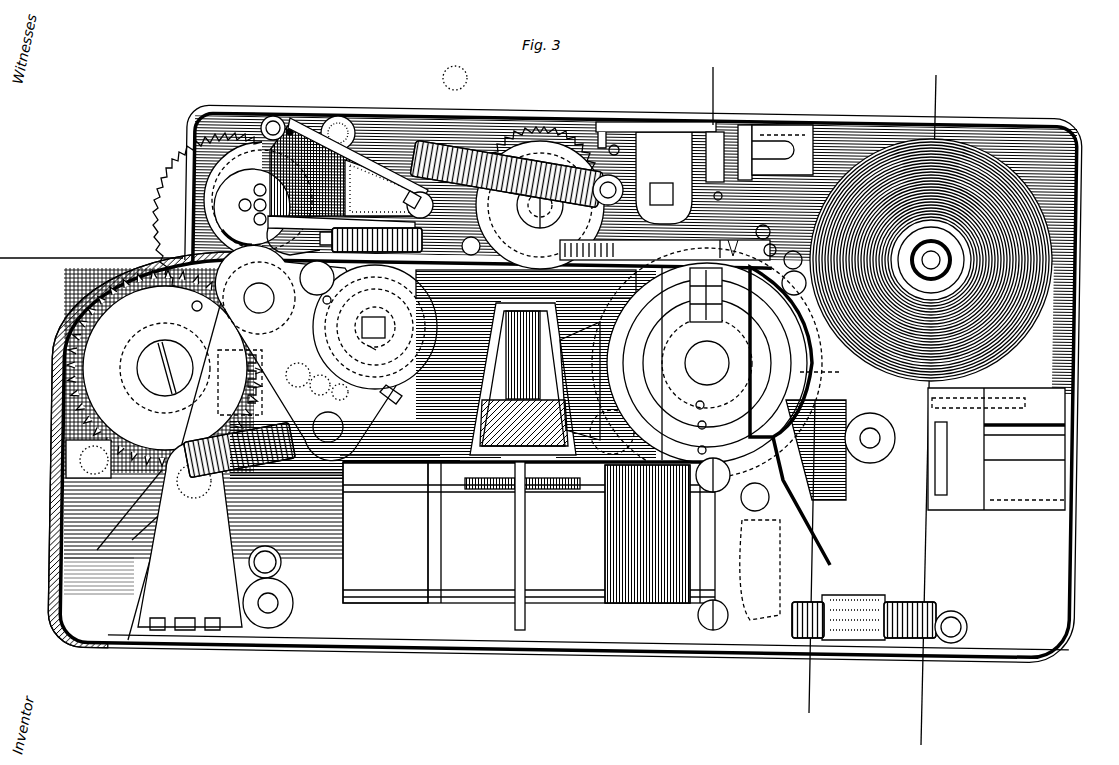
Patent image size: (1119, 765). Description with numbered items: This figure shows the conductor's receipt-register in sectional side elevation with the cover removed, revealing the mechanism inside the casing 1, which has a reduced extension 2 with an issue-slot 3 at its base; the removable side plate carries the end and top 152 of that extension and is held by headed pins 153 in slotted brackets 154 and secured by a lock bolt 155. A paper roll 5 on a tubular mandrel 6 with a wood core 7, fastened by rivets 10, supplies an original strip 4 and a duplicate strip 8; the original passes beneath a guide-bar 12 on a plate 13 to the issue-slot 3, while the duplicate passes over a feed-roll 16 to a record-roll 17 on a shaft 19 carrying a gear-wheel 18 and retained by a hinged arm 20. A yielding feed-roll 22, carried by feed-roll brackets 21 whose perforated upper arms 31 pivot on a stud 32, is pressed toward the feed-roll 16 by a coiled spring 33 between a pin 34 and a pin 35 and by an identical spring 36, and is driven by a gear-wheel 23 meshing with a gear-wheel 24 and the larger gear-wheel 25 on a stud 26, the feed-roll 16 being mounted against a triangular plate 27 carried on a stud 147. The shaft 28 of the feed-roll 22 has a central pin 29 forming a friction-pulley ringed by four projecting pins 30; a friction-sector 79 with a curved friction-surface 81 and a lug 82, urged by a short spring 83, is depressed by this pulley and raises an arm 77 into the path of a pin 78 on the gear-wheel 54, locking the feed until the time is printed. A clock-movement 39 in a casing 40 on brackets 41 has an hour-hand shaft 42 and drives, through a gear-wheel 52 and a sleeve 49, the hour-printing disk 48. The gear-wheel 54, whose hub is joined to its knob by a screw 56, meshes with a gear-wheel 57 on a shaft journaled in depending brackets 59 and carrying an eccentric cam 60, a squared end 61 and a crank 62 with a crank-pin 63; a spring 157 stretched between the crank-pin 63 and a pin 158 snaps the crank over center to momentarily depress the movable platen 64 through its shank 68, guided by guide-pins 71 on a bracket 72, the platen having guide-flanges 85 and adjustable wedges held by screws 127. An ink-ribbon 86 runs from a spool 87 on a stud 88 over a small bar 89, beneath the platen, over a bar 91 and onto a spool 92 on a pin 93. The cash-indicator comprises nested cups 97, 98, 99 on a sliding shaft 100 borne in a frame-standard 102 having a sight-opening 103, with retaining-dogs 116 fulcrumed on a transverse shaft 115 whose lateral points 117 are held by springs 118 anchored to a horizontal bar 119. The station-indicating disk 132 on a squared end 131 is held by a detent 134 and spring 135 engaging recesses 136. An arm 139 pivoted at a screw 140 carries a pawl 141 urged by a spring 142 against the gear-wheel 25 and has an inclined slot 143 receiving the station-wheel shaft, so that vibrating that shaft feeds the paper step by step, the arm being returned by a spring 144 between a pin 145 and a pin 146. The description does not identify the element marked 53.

The casing 1 is at (1015, 116).
The reduced extension 2 is at (88, 295).
The issue-slot 3 is at (183, 250).
The strip of paper 4 is at (91, 249).
The roll 5 is at (1040, 235).
The tubular mandrel 6 is at (962, 258).
The wood core 7 is at (1080, 258).
The strip of paper 8 is at (851, 407).
The rivets 10 is at (759, 391).
The roller or bar 12 is at (765, 222).
The plate 13 is at (795, 260).
The feed-roll 16 is at (197, 308).
The spool or roll 17 is at (161, 512).
The gear-wheel 18 is at (127, 510).
The shaft 19 is at (194, 483).
The hinged arm 20 is at (190, 536).
The feed-roll brackets 21 is at (236, 192).
The feed-roll 22 is at (232, 215).
The gear-wheel 23 is at (254, 186).
The gear-wheel 24 is at (140, 298).
The gear-wheel 25 is at (411, 353).
The stud 26 is at (150, 370).
The triangular plate 27 is at (310, 352).
The shaft 28 is at (239, 204).
The central pin 29 is at (254, 206).
The projecting pins 30 is at (258, 188).
The upper arms 31 is at (342, 118).
The stud 32 is at (370, 128).
The coiled spring 33 is at (318, 236).
The pin 34 is at (332, 247).
The pin 35 is at (474, 238).
The spring 36 is at (540, 205).
The clock-movement 39 is at (529, 532).
The casing 40 is at (614, 552).
The brackets 41 is at (325, 632).
The hour-hand shaft 42 is at (524, 552).
The circular disk 48 is at (526, 284).
The sleeve 49 is at (523, 379).
The gear-wheel 52 is at (485, 490).
The plate 53 is at (580, 381).
The gear-wheel 54 is at (546, 140).
The screw 56 is at (540, 205).
The gear-wheel 57 is at (718, 148).
The depending brackets 59 is at (670, 130).
The eccentric cam 60 is at (440, 195).
The squared portion 61 is at (662, 182).
The crank 62 is at (640, 206).
The crank-pin 63 is at (612, 186).
The movable platen 64 is at (665, 250).
The shank 68 is at (752, 140).
The guide-pins 71 is at (615, 146).
The bracket 72 is at (600, 130).
The arm 77 is at (362, 234).
The pin 78 is at (521, 245).
The friction-sector 79 is at (380, 188).
The friction-surface 81 is at (342, 168).
The lug 82 is at (291, 128).
The spring 83 is at (430, 150).
The guide-flanges 85 is at (712, 250).
The ink-ribbon 86 is at (828, 405).
The spool 87 is at (880, 460).
The pin or stud 88 is at (876, 430).
The bar 89 is at (792, 290).
The bar or roll 91 is at (317, 282).
The spool 92 is at (288, 605).
The pin 93 is at (272, 601).
The cup 97 is at (664, 448).
The cup 98 is at (664, 426).
The cup 99 is at (665, 402).
The sliding shaft 100 is at (755, 362).
The frame-standard 102 is at (760, 570).
The sight-opening 103 is at (706, 322).
The transverse shaft 115 is at (760, 501).
The retaining-dogs 116 is at (804, 501).
The lateral points 117 is at (831, 370).
The springs 118 is at (920, 605).
The horizontal bar 119 is at (962, 627).
The screws 127 is at (711, 193).
The squared end 131 is at (374, 338).
The station-indicating disk 132 is at (373, 360).
The detent 134 is at (385, 392).
The spring 135 is at (395, 465).
The recesses 136 is at (262, 298).
The arm 139 is at (420, 470).
The screw or rivet 140 is at (612, 432).
The pawl 141 is at (248, 391).
The spring 142 is at (298, 365).
The inclined slot 143 is at (375, 327).
The spring 144 is at (316, 487).
The pin 145 is at (326, 389).
The pin 146 is at (252, 568).
The stud 147 is at (327, 427).
The end and top 152 is at (56, 350).
The headed pins 153 is at (66, 462).
The slotted brackets 154 is at (806, 128).
The bolt 155 is at (942, 462).
The spring 157 is at (452, 152).
The pin 158 is at (272, 115).